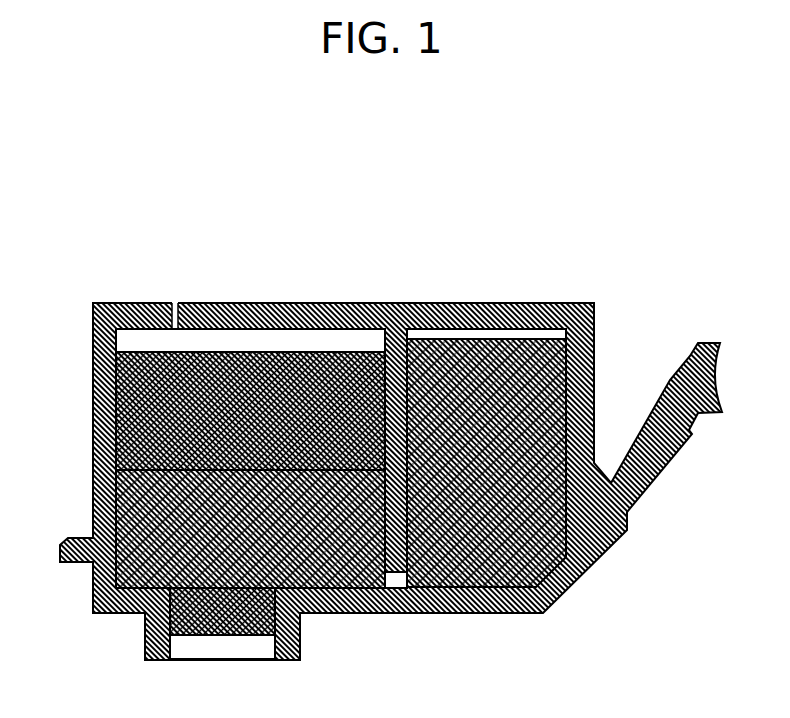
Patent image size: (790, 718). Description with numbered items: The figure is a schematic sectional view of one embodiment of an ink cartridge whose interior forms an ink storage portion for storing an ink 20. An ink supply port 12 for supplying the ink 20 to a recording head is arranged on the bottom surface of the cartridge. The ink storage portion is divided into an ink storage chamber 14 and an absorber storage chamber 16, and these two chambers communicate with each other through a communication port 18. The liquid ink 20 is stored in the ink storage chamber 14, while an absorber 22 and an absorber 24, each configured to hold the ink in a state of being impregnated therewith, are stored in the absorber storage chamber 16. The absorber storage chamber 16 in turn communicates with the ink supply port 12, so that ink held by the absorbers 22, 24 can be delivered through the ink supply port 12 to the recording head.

The ink supply port 12 is at (227, 647).
The ink storage chamber 14 is at (533, 337).
The absorber storage chamber 16 is at (233, 343).
The communication port 18 is at (397, 578).
The ink 20 is at (513, 555).
The absorber 22 is at (137, 505).
The absorber 24 is at (167, 412).